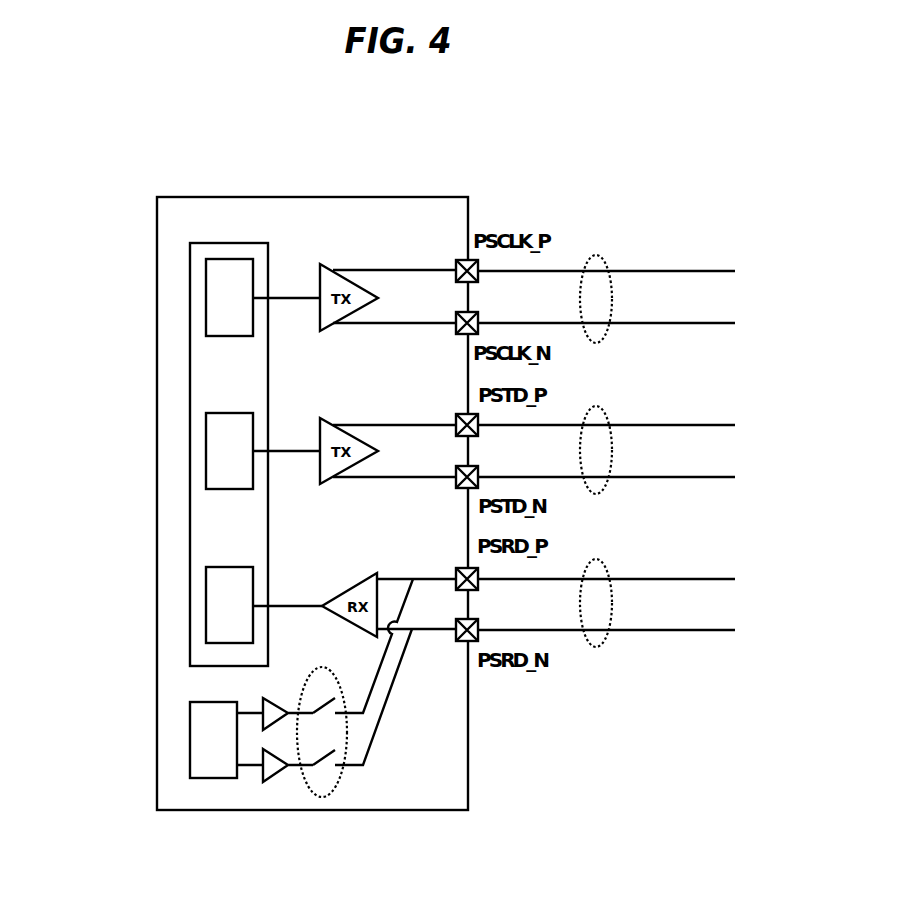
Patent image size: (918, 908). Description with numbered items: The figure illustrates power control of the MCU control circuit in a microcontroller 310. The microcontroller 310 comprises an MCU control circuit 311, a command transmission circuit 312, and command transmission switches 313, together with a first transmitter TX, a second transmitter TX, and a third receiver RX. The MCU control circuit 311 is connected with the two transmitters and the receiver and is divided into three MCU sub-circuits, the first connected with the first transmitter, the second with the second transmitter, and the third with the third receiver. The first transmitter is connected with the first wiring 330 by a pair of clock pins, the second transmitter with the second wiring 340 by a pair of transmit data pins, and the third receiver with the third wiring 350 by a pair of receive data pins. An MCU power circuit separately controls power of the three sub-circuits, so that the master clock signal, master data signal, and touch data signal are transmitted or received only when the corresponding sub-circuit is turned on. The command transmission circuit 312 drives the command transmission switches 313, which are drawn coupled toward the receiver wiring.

The microcontroller 310 is at (310, 197).
The MCU control circuit 311 is at (190, 258).
The command transmission circuit 312 is at (190, 740).
The command transmission switches 313 is at (322, 797).
The first wiring 330 is at (596, 255).
The second wiring 340 is at (596, 407).
The third wiring 350 is at (596, 560).